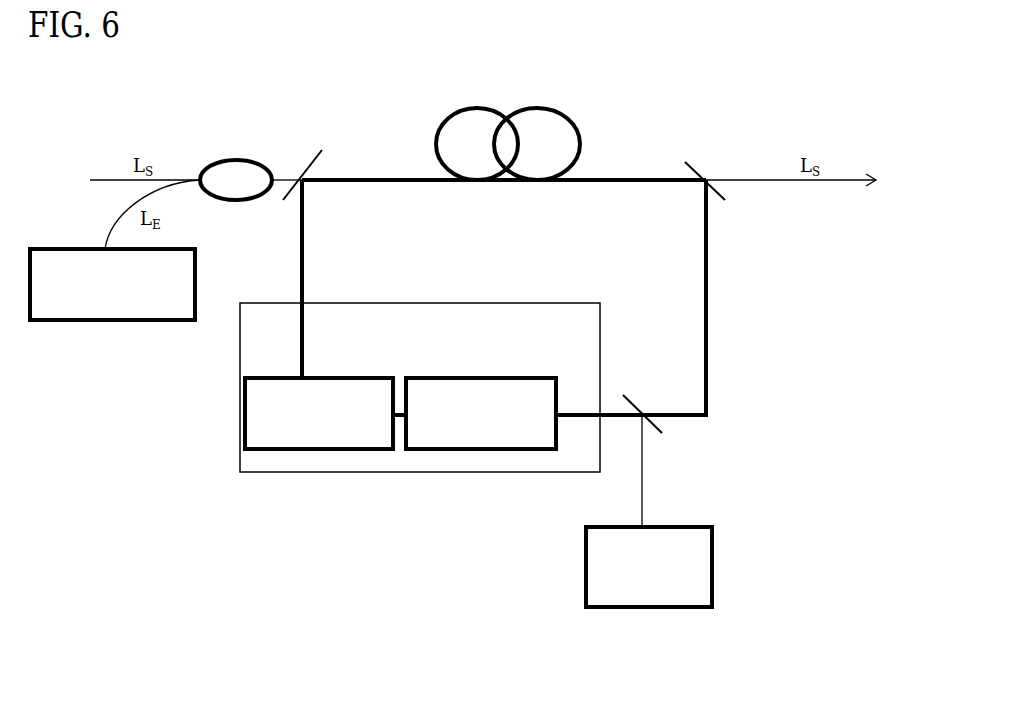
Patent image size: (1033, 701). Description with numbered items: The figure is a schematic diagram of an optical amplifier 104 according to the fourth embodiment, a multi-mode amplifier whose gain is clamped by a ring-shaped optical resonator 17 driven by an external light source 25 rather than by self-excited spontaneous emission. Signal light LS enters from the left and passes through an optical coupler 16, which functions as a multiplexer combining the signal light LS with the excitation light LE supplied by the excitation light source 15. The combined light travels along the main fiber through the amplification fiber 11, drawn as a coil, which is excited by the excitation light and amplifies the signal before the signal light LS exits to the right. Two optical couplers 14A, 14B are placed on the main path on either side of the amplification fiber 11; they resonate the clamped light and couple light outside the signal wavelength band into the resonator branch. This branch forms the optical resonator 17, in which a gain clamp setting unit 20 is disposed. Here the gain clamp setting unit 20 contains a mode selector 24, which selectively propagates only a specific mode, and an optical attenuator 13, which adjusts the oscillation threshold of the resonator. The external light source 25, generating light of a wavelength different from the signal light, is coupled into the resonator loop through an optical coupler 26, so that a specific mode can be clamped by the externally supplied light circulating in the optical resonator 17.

The optical amplifier 104 is at (687, 70).
The amplification fiber 11 is at (580, 125).
The optical coupler 16 is at (232, 161).
The optical coupler 14A is at (312, 163).
The optical coupler 14B is at (700, 160).
The excitation light source 15 is at (80, 249).
The gain clamp setting unit 20 is at (415, 303).
The mode selector 24 is at (320, 378).
The optical attenuator 13 is at (483, 378).
The optical coupler 26 is at (635, 397).
The external light source 25 is at (660, 527).
The optical resonator 17 is at (778, 543).